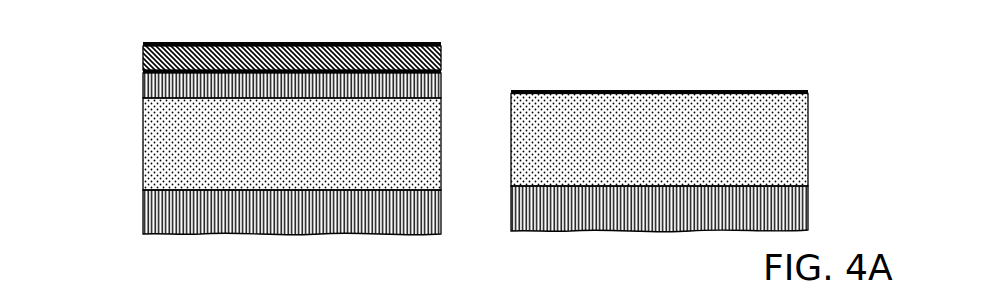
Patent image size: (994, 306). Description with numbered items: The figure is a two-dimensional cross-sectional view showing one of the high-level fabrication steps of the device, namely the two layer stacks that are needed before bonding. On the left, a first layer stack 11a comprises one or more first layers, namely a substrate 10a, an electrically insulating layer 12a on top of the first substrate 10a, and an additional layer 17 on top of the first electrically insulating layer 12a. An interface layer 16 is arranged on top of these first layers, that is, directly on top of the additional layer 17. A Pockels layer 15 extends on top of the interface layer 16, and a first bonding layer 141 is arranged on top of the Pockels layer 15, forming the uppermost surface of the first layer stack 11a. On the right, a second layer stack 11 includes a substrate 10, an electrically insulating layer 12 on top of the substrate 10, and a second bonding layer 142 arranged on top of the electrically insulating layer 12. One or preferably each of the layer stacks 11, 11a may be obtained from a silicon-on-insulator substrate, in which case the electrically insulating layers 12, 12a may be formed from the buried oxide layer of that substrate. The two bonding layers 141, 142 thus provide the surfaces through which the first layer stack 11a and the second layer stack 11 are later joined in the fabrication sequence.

The substrate 10 is at (510, 218).
The substrate 10a is at (156, 236).
The second layer stack 11 is at (836, 138).
The first layer stack 11a is at (122, 211).
The electrically insulating layer 12 is at (535, 127).
The electrically insulating layer 12a is at (143, 152).
The Pockels layer 15 is at (143, 56).
The interface layer 16 is at (441, 72).
The additional layer 17 is at (143, 87).
The first bonding layer 141 is at (432, 43).
The second bonding layer 142 is at (790, 90).